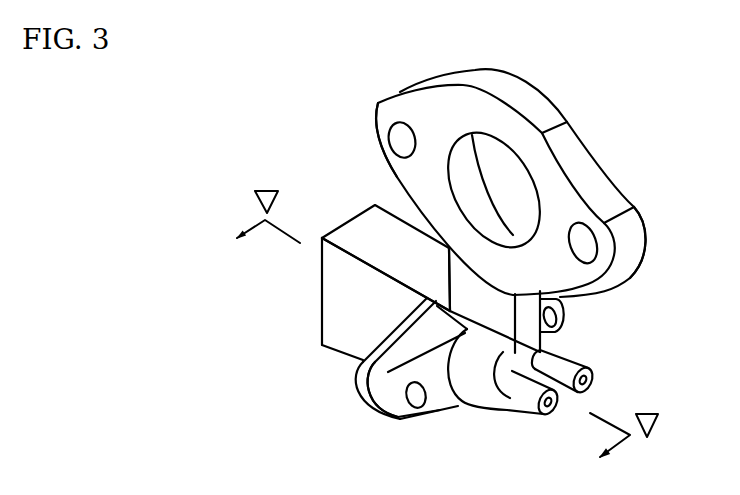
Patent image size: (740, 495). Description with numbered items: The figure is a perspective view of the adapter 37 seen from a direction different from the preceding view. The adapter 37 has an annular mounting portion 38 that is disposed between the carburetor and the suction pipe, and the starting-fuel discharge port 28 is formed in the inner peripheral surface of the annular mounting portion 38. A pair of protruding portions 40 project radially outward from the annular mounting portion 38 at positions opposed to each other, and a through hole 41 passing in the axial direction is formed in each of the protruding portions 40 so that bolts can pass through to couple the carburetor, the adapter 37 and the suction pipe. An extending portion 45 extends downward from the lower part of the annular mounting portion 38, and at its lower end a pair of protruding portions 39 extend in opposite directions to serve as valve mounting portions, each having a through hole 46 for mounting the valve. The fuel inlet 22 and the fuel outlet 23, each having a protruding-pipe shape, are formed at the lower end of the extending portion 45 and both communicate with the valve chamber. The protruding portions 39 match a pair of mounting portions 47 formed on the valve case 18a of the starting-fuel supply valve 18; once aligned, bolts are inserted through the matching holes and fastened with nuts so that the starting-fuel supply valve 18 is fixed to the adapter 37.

The starting-fuel supply valve 18 is at (355, 291).
The valve case 18a is at (358, 325).
The fuel inlet 22 is at (551, 414).
The fuel outlet 23 is at (588, 390).
The starting-fuel discharge port 28 is at (512, 233).
The adapter 37 is at (544, 93).
The annular mounting portion 38 is at (574, 178).
The protruding portions 39 is at (381, 393).
The protruding portions 40 is at (377, 108).
The through hole 41 is at (398, 142).
The extending portion 45 is at (493, 310).
The through hole 46 is at (415, 408).
The mounting portions 47 is at (357, 369).